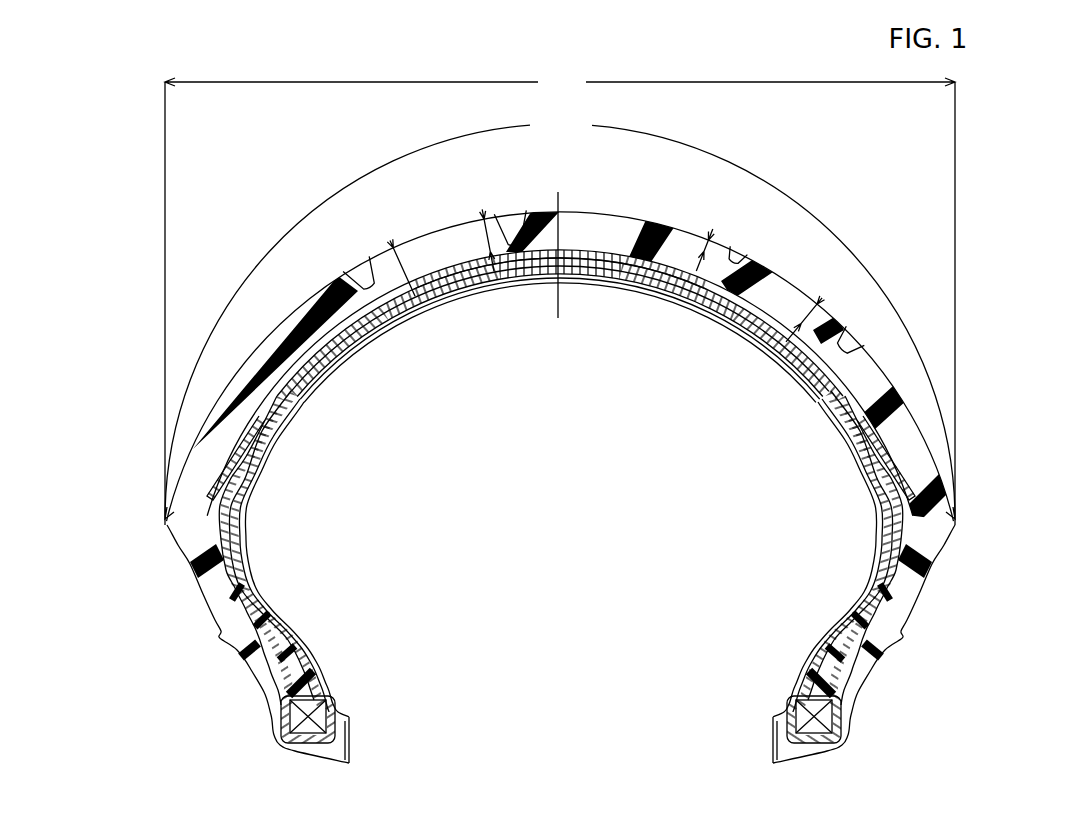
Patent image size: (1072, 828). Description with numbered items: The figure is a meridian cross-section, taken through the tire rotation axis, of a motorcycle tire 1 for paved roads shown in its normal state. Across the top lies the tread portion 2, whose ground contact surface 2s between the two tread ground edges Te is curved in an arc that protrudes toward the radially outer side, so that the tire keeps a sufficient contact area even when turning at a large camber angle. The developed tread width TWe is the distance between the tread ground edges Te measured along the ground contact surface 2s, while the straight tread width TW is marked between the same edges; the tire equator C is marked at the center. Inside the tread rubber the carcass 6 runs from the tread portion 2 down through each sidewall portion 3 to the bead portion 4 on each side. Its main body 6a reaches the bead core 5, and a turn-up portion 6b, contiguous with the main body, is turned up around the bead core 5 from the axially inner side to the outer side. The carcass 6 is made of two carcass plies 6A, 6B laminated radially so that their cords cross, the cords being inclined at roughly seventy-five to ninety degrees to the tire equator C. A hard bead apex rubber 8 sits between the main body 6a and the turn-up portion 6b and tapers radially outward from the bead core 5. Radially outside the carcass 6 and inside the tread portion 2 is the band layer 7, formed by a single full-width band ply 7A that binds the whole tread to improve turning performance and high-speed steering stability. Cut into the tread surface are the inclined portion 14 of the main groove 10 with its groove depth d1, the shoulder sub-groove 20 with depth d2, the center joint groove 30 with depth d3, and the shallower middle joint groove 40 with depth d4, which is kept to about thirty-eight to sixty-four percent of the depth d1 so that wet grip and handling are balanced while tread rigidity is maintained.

The motorcycle tire 1 is at (561, 449).
The tread portion 2 is at (561, 331).
The ground contact surface 2s is at (292, 313).
The sidewall portion 3 is at (204, 600).
The bead portion 4 is at (563, 664).
The bead core 5 is at (300, 719).
The carcass 6 is at (561, 500).
The carcass ply 6A is at (325, 366).
The carcass ply 6B is at (386, 318).
The main body 6a is at (877, 508).
The turn-up portion 6b is at (825, 617).
The band layer 7 is at (559, 330).
The band ply 7A is at (524, 262).
The bead apex rubber 8 is at (300, 672).
The main groove 10 is at (318, 255).
The inclined portion 14 is at (360, 290).
The shoulder sub-groove 20 is at (848, 345).
The center joint groove 30 is at (517, 228).
The middle joint groove 40 is at (733, 262).
The groove depth of inclined portion d1 is at (402, 254).
The groove depth of shoulder sub-groove d2 is at (808, 315).
The groove depth of center joint groove d3 is at (481, 232).
The groove depth of middle joint groove d4 is at (704, 246).
The tire equator C is at (560, 238).
The tread width TW is at (560, 296).
The developed tread width TWe is at (560, 314).
The tread ground edge Te is at (166, 527).